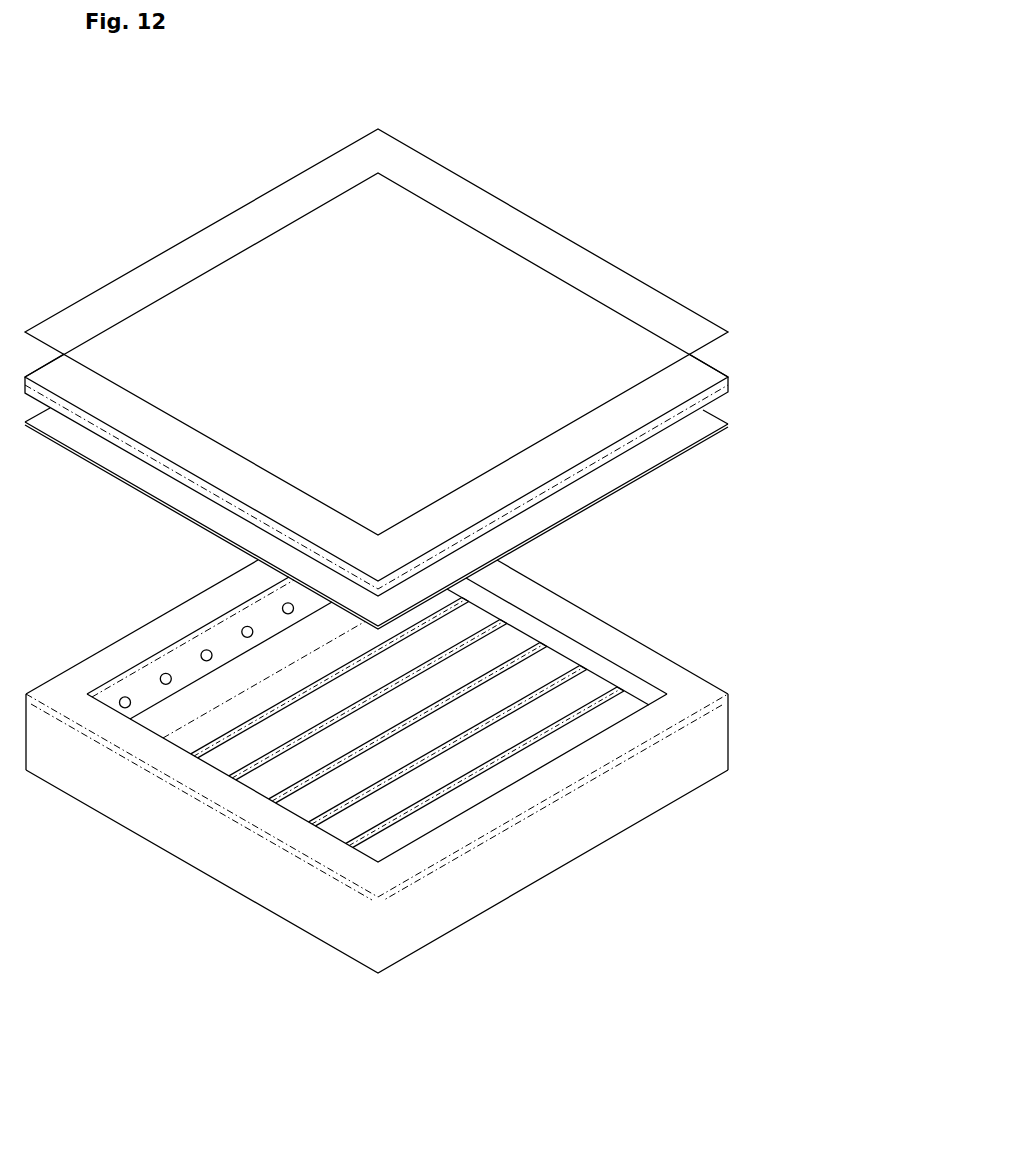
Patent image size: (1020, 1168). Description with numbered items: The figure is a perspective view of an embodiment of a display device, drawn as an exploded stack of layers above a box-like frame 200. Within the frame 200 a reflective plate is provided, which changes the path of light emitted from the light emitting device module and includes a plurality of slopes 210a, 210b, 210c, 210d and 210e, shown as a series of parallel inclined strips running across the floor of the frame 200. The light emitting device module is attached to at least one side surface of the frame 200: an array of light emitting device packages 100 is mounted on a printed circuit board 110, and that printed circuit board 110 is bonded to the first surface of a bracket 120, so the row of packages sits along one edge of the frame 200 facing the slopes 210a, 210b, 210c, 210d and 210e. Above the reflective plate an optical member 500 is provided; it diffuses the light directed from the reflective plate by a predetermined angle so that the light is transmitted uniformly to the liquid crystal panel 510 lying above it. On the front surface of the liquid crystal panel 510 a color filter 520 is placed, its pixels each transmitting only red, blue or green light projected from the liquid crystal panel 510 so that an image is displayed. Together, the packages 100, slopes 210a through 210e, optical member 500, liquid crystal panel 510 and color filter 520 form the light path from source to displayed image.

The light emitting device packages 100 is at (246, 628).
The printed circuit board 110 is at (194, 658).
The bracket 120 is at (164, 713).
The frame 200 is at (89, 679).
The slope 210a is at (463, 602).
The slope 210b is at (498, 625).
The slope 210c is at (535, 647).
The slope 210d is at (580, 664).
The slope 210e is at (627, 681).
The optical member 500 is at (710, 424).
The liquid crystal panel 510 is at (706, 376).
The color filter 520 is at (704, 330).